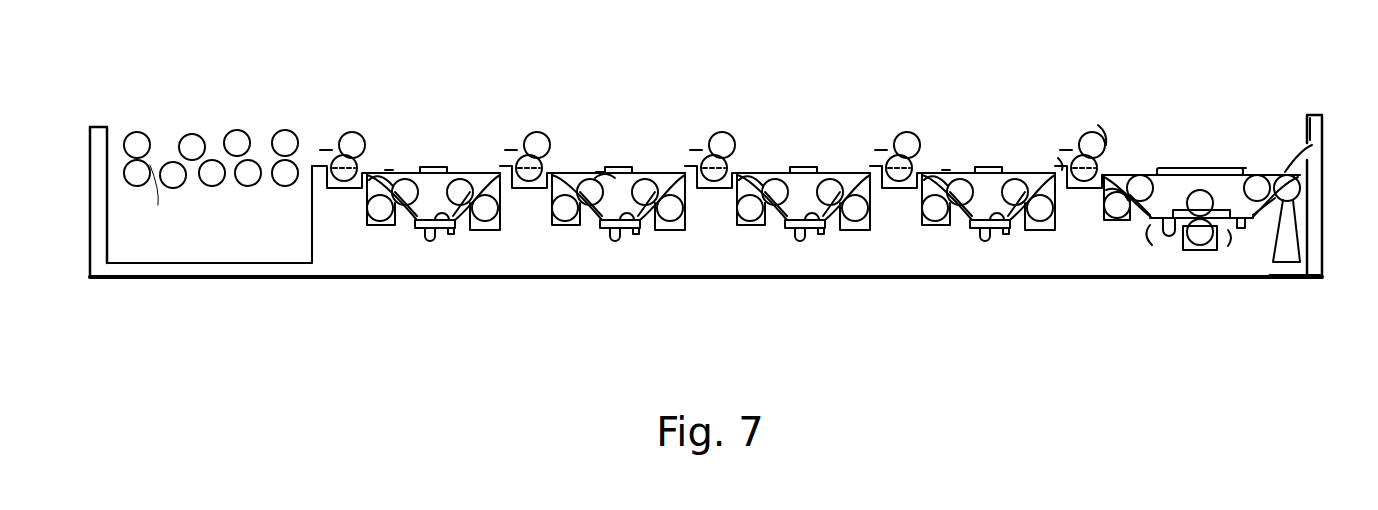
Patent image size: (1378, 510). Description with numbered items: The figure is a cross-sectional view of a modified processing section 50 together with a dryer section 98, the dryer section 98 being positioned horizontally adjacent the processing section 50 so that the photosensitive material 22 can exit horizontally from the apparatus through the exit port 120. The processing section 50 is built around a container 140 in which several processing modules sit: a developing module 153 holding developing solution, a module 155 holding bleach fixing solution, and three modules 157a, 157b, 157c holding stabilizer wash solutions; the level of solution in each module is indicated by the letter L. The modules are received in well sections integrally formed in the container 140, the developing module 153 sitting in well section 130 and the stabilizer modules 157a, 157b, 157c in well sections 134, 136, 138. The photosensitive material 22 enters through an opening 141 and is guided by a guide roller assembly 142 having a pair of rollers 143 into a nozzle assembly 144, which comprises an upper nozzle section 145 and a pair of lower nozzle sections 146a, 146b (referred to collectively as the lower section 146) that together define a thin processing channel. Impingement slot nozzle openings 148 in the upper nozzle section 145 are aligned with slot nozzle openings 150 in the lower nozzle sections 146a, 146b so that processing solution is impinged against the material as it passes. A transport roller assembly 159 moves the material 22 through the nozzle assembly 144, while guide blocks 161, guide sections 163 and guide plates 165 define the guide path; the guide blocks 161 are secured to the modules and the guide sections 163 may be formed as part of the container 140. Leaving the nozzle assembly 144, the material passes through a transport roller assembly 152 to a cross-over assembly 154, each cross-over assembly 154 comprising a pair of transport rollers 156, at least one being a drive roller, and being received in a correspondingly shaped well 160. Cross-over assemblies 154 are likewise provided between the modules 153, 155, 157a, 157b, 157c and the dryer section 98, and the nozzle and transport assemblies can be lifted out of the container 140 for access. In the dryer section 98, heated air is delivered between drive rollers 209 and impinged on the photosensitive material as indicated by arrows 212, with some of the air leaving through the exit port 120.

The exit port 120 is at (118, 120).
The drive rollers 209 is at (133, 134).
The arrows 212 is at (215, 136).
The dryer section 98 is at (235, 266).
The container 140 is at (325, 282).
The processing section 50 is at (678, 280).
The cross-over assembly 154 is at (361, 133).
The processing module 157c is at (420, 240).
The processing module 157b is at (575, 242).
The processing module 157a is at (797, 245).
The processing module 155 is at (980, 245).
The impingement slot nozzle openings 148 is at (470, 226).
The upper nozzle section 145 is at (447, 162).
The guide roller assembly 142 is at (476, 166).
The transport roller assembly 152 is at (412, 172).
The slot nozzle openings 150 is at (416, 226).
The lower nozzle section 146 is at (436, 238).
The well section 138 is at (400, 172).
The well section 136 is at (603, 172).
The well section 134 is at (755, 172).
The processing solution level L is at (390, 168).
The developing module 153 is at (1143, 238).
The well section 130 is at (1198, 160).
The nozzle assembly 144 is at (1202, 160).
The transport roller assembly 159 is at (1197, 250).
The lower nozzle section 146a is at (1167, 247).
The lower nozzle section 146b is at (1215, 260).
The guide sections 163 is at (1107, 230).
The transport rollers 156 is at (1090, 135).
The well 160 is at (1062, 162).
The guide blocks 161 is at (1117, 170).
The guide plates 165 is at (1100, 150).
The photosensitive material 22 is at (1287, 150).
The opening 141 is at (1325, 137).
The rollers 143 is at (1300, 274).